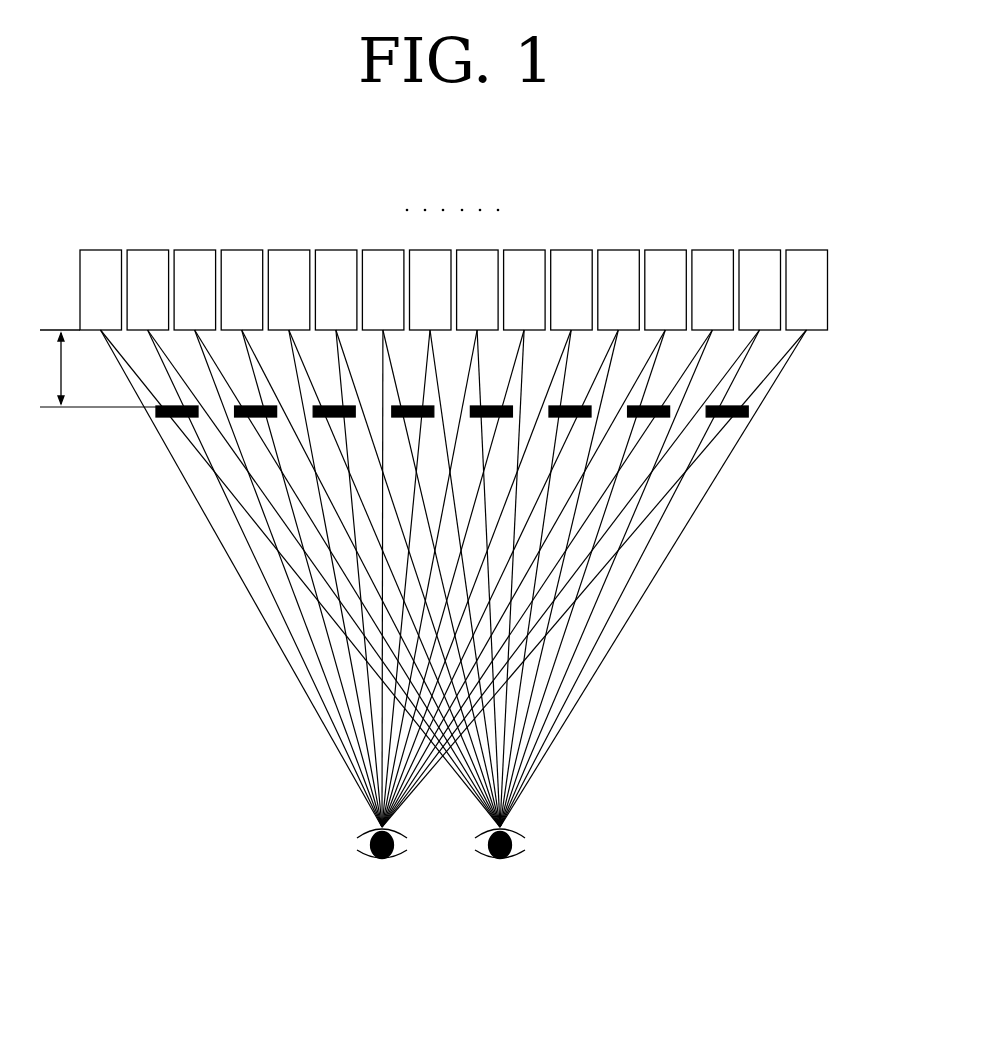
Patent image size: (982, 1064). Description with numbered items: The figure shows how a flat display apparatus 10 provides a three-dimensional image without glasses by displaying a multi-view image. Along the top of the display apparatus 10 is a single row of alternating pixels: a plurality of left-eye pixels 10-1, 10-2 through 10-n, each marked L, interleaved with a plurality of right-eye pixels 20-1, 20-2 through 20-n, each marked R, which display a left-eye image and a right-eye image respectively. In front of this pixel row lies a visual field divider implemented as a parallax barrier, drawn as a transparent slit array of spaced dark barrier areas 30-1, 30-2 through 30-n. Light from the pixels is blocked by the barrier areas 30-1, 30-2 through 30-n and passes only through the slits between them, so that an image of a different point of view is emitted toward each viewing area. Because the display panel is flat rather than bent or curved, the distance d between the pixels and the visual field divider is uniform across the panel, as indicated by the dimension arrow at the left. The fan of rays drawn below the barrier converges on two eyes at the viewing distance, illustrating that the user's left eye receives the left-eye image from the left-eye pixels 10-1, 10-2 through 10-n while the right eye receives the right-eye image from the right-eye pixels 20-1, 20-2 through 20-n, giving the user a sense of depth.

The display apparatus 10 is at (468, 145).
The left-eye pixel 10-1 is at (90, 250).
The right-eye pixel 20-1 is at (145, 250).
The left-eye pixel 10-2 is at (197, 250).
The right-eye pixel 20-2 is at (248, 250).
The left-eye pixel 10-n is at (761, 250).
The right-eye pixel 20-n is at (815, 250).
The barrier area 30-1 is at (165, 418).
The barrier area 30-2 is at (245, 418).
The barrier area 30-n is at (740, 418).
The distance d is at (51, 368).